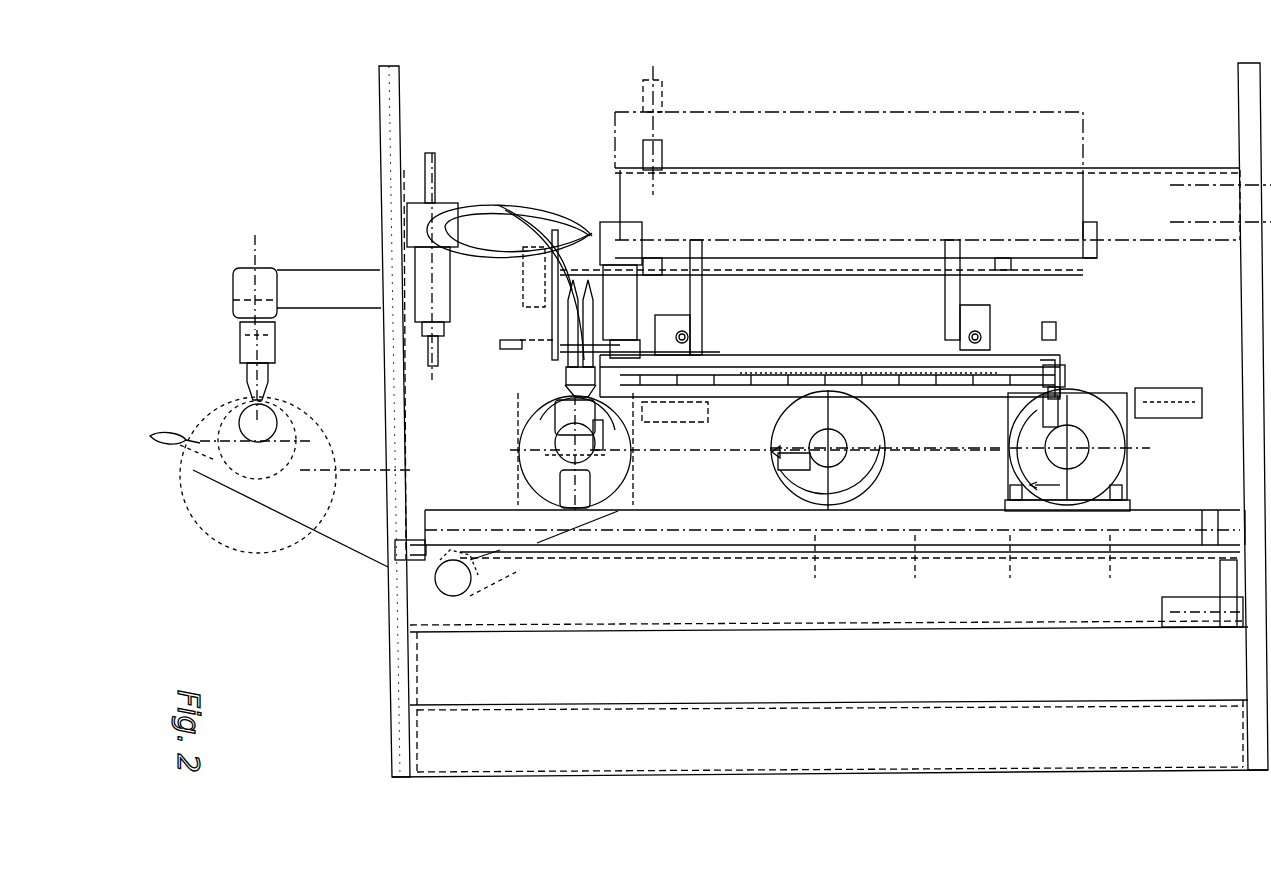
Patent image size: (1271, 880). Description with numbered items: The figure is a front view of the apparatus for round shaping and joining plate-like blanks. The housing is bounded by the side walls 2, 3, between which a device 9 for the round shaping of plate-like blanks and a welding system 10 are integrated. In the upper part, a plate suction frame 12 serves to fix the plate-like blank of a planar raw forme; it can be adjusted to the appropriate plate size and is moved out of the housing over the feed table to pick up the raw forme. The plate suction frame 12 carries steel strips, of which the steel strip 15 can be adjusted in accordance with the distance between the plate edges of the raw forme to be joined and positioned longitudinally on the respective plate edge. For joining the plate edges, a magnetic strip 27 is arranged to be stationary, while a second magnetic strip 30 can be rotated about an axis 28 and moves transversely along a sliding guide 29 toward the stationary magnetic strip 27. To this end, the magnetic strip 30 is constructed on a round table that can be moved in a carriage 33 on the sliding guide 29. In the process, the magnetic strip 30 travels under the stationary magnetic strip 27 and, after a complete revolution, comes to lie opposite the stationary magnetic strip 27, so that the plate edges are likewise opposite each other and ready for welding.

The side wall 2 is at (398, 102).
The side wall 3 is at (1240, 100).
The device for the round shaping of plate-like blanks 9 is at (742, 485).
The welding system 10 is at (560, 340).
The plate suction frame 12 is at (828, 352).
The steel strip 15 is at (563, 393).
The stationary magnetic strip 27 is at (625, 560).
The axis 28 is at (1070, 452).
The sliding guide 29 is at (955, 525).
The rotatable magnetic strip 30 is at (553, 426).
The carriage 33 is at (1098, 520).